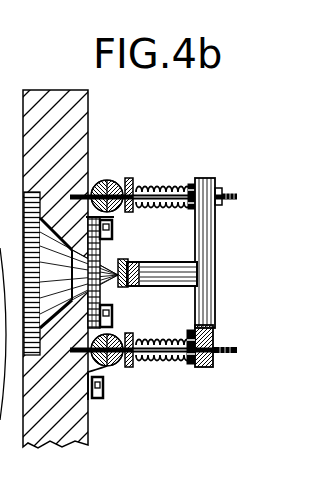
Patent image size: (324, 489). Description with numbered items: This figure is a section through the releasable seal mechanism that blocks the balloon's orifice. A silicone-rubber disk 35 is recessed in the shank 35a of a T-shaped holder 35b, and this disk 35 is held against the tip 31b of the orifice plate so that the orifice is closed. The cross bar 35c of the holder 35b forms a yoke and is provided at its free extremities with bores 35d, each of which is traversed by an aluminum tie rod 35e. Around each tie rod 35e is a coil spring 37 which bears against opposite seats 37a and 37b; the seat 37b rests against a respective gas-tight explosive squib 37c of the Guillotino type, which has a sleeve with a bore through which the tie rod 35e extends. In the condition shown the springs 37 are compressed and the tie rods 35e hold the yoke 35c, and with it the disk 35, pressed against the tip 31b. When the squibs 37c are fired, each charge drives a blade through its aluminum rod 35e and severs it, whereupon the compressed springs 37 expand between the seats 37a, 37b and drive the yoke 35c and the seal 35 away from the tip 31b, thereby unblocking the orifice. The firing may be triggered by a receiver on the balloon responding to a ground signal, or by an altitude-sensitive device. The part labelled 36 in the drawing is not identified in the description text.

The gas-tight explosive squib 37c is at (107, 180).
The spring seat 37b is at (129, 178).
The spring seat 37a is at (192, 183).
The T-shaped holder 35b is at (246, 231).
The silicone-rubber disk 35 is at (209, 265).
The cross bar 35c is at (214, 262).
The shank 35a is at (168, 287).
The bore 35d is at (214, 334).
The tip of the orifice plate 31b is at (124, 287).
The coil spring 37 is at (165, 370).
The aluminum tie rod 35e is at (183, 366).
The lower screw 36 is at (226, 368).